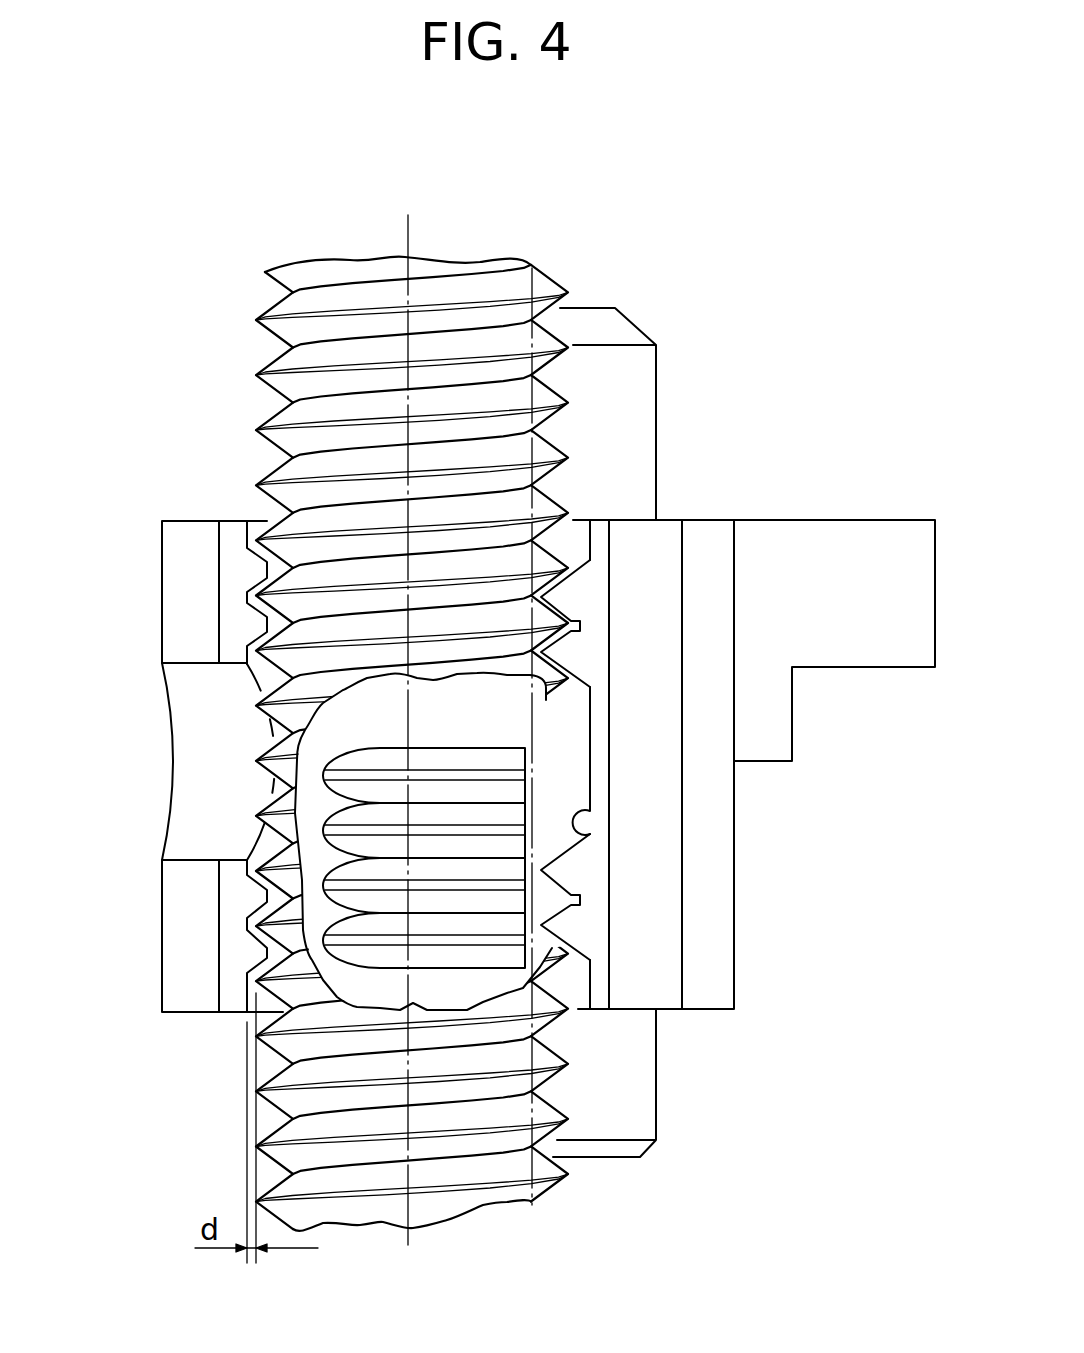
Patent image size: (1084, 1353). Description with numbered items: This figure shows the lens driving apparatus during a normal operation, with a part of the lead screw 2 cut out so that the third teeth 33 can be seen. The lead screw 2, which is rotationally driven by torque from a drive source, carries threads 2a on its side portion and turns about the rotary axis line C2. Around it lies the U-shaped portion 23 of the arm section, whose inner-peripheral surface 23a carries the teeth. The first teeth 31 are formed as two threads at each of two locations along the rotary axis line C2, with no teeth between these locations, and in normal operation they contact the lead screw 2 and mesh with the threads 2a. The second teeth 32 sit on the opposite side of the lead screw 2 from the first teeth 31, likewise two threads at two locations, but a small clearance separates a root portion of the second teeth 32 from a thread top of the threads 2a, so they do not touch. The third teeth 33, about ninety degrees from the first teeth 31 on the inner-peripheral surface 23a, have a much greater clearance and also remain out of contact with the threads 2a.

The lead screw 2 is at (501, 695).
The threads 2a is at (545, 447).
The U-shaped portion 23 is at (499, 732).
The inner-peripheral surface 23a is at (590, 836).
The first teeth 31 is at (563, 923).
The second teeth 32 is at (257, 958).
The third teeth 33 is at (450, 958).
The rotary axis line C2 is at (410, 708).